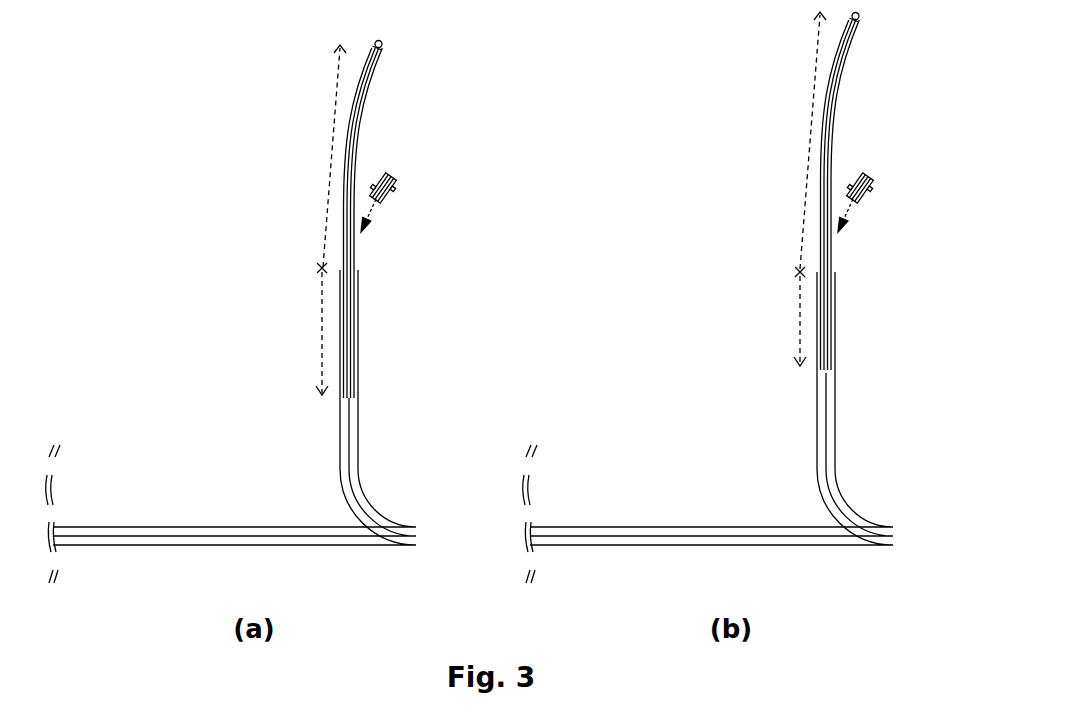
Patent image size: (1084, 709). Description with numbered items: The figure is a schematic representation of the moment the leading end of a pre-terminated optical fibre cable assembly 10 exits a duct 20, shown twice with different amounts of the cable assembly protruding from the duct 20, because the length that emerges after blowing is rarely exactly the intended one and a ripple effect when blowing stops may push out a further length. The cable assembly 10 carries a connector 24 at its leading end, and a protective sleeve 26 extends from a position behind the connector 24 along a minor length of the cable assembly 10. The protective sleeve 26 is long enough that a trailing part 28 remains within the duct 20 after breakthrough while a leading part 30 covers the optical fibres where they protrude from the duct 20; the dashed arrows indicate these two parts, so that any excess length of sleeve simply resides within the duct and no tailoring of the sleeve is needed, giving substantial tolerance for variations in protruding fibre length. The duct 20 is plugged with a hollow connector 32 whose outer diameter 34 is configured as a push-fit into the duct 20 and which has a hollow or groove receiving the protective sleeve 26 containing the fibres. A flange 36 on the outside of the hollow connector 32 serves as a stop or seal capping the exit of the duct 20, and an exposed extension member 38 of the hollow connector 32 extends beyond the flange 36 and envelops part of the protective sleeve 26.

The pre-terminated optical fibre cable assembly 10 is at (350, 440).
The duct 20 is at (193, 527).
The connector 24 is at (384, 51).
The protective sleeve 26 is at (357, 120).
The trailing part 28 is at (320, 358).
The leading part 30 is at (330, 150).
The hollow connector 32 is at (401, 205).
The outer diameter 34 is at (396, 167).
The flange 36 is at (374, 172).
The exposed extension member 38 is at (394, 191).